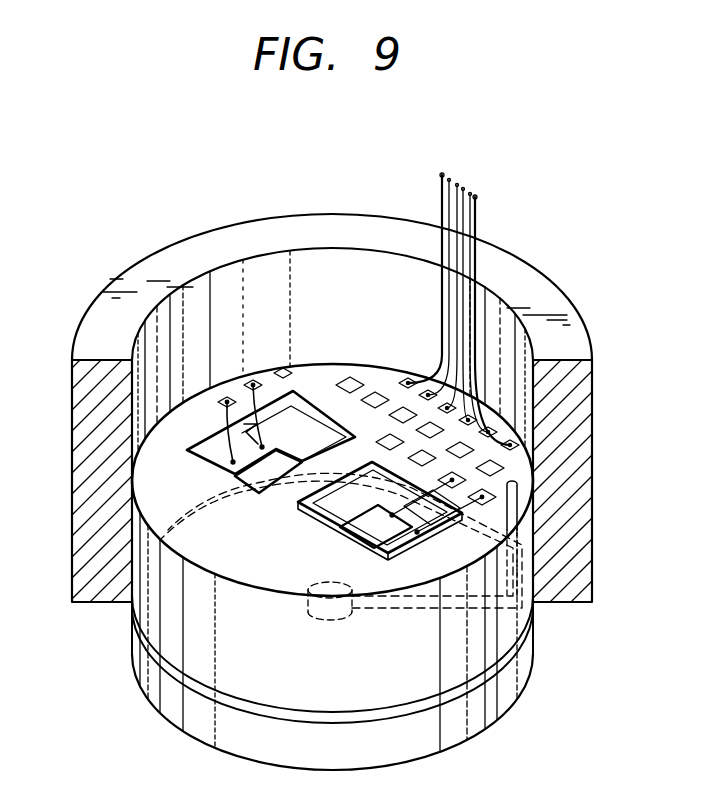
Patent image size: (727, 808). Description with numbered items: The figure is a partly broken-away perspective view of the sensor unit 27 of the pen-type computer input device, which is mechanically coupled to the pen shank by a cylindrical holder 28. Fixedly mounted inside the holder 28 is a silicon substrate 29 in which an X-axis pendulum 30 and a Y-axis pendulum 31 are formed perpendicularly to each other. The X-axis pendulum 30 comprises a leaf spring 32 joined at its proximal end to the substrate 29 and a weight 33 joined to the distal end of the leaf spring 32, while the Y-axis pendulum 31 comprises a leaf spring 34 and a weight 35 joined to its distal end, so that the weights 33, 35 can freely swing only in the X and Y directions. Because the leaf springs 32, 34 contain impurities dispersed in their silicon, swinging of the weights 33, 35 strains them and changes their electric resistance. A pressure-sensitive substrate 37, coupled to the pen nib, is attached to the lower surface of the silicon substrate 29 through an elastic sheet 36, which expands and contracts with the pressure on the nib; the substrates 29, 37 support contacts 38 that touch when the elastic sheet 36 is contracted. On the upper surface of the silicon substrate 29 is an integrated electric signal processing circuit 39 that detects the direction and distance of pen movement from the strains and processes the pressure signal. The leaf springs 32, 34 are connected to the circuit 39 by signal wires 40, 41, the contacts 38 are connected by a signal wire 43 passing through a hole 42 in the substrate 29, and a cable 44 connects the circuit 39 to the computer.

The sensor unit 27 is at (92, 303).
The cylindrical holder 28 is at (547, 293).
The silicon substrate 29 is at (493, 630).
The X-axis pendulum 30 is at (372, 532).
The Y-axis pendulum 31 is at (223, 468).
The leaf spring 32 is at (540, 512).
The weight 33 is at (333, 519).
The leaf spring 34 is at (222, 437).
The weight 35 is at (291, 405).
The elastic sheet 36 is at (505, 663).
The pressure-sensitive substrate 37 is at (493, 713).
The contacts 38 is at (350, 613).
The electric signal processing circuit 39 is at (505, 467).
The signal wire 40 is at (418, 533).
The signal wire 41 is at (228, 420).
The hole 42 is at (520, 604).
The signal wire 43 is at (522, 548).
The cable 44 is at (482, 190).